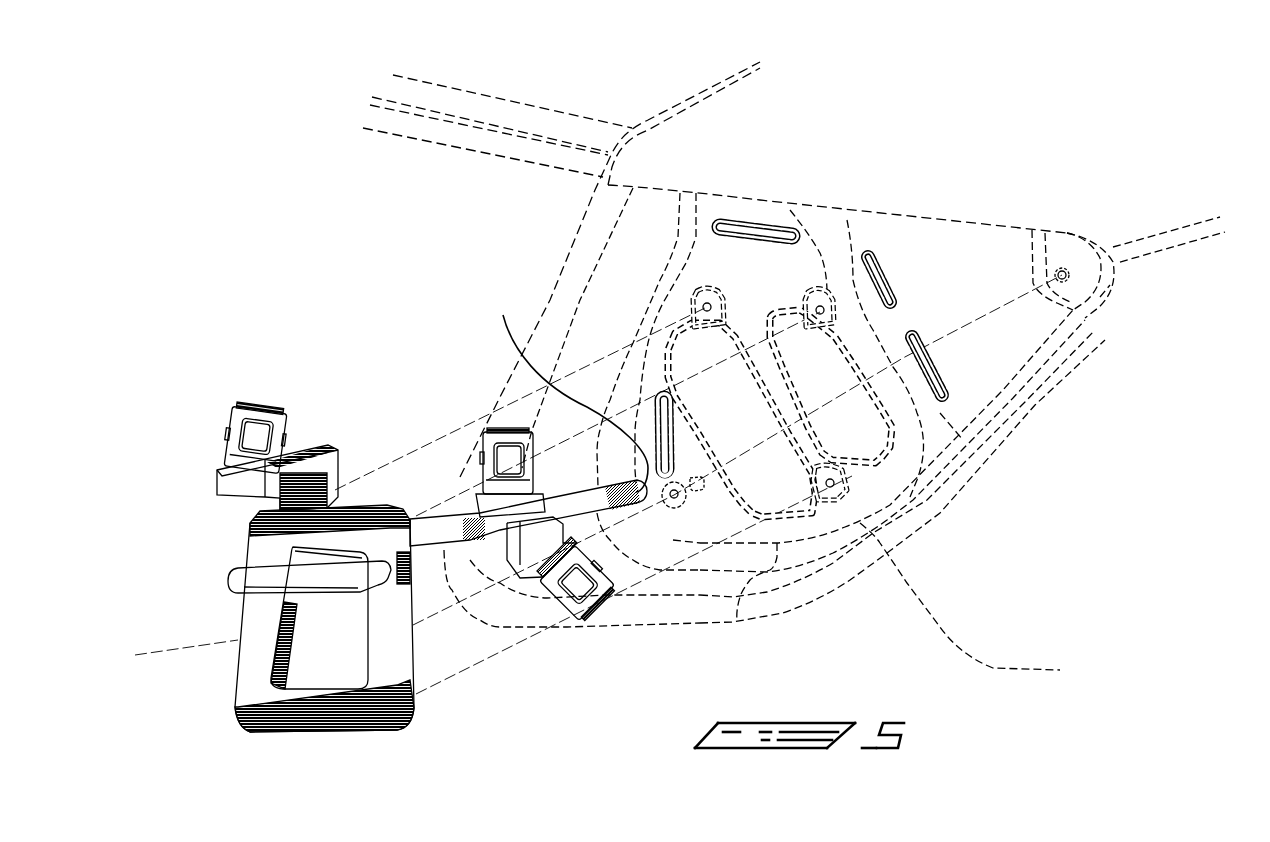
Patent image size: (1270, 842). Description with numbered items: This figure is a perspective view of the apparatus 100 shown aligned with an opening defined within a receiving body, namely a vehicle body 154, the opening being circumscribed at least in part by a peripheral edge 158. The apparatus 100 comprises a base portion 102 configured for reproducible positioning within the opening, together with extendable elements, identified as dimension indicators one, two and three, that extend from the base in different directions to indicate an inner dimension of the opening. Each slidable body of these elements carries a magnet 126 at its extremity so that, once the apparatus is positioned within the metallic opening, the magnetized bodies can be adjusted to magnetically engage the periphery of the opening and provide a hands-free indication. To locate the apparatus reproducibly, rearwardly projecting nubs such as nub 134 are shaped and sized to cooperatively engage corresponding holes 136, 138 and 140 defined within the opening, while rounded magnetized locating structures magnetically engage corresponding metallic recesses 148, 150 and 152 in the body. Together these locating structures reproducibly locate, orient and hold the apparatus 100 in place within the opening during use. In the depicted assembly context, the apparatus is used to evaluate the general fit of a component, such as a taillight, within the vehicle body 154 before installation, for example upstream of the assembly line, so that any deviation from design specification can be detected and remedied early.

The apparatus 100 is at (394, 530).
The base portion 102 is at (352, 712).
The magnet 126 is at (258, 405).
The rearwardly projecting nub 134 is at (529, 433).
The hole 136 is at (670, 508).
The hole 138 is at (697, 493).
The hole 140 is at (1070, 285).
The recess 148 is at (707, 290).
The recess 150 is at (845, 495).
The recess 152 is at (828, 290).
The vehicle body 154 is at (690, 118).
The edge 158 is at (945, 218).